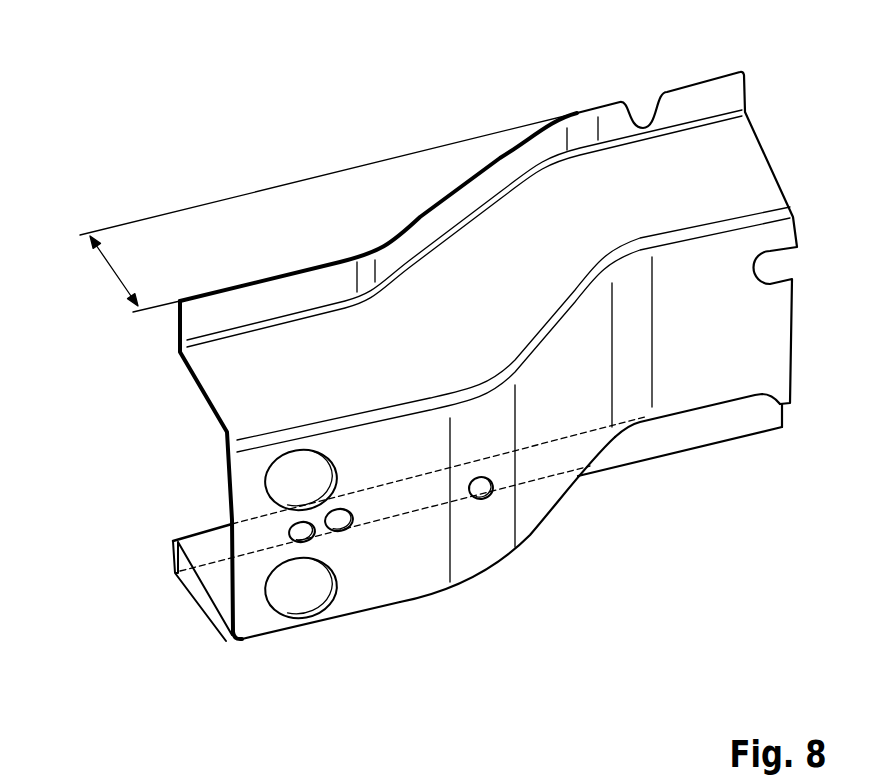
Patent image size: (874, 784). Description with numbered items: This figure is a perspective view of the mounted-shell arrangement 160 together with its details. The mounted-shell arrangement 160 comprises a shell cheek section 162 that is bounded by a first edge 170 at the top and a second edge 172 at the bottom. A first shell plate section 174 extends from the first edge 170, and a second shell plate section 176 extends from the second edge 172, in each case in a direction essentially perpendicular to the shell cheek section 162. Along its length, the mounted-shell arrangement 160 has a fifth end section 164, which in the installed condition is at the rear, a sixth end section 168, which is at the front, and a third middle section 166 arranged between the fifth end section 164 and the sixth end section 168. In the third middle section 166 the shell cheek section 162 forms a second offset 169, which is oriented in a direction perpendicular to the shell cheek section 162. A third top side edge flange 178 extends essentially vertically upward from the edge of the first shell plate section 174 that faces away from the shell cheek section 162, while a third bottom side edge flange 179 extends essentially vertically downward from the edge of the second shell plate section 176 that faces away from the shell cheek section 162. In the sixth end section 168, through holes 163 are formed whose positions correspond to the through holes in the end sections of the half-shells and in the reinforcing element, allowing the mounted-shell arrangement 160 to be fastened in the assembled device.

The mounted-shell arrangement 160 is at (357, 92).
The shell cheek section 162 is at (572, 418).
The through holes 163 is at (293, 476).
The fifth end section 164 is at (782, 457).
The third middle section 166 is at (537, 587).
The sixth end section 168 is at (255, 672).
The second offset 169 is at (110, 273).
The first edge 170 is at (357, 417).
The second edge 172 is at (367, 613).
The first shell plate section 174 is at (593, 190).
The second shell plate section 176 is at (222, 592).
The third top side edge flange 178 is at (480, 190).
The third bottom side edge flange 179 is at (178, 565).